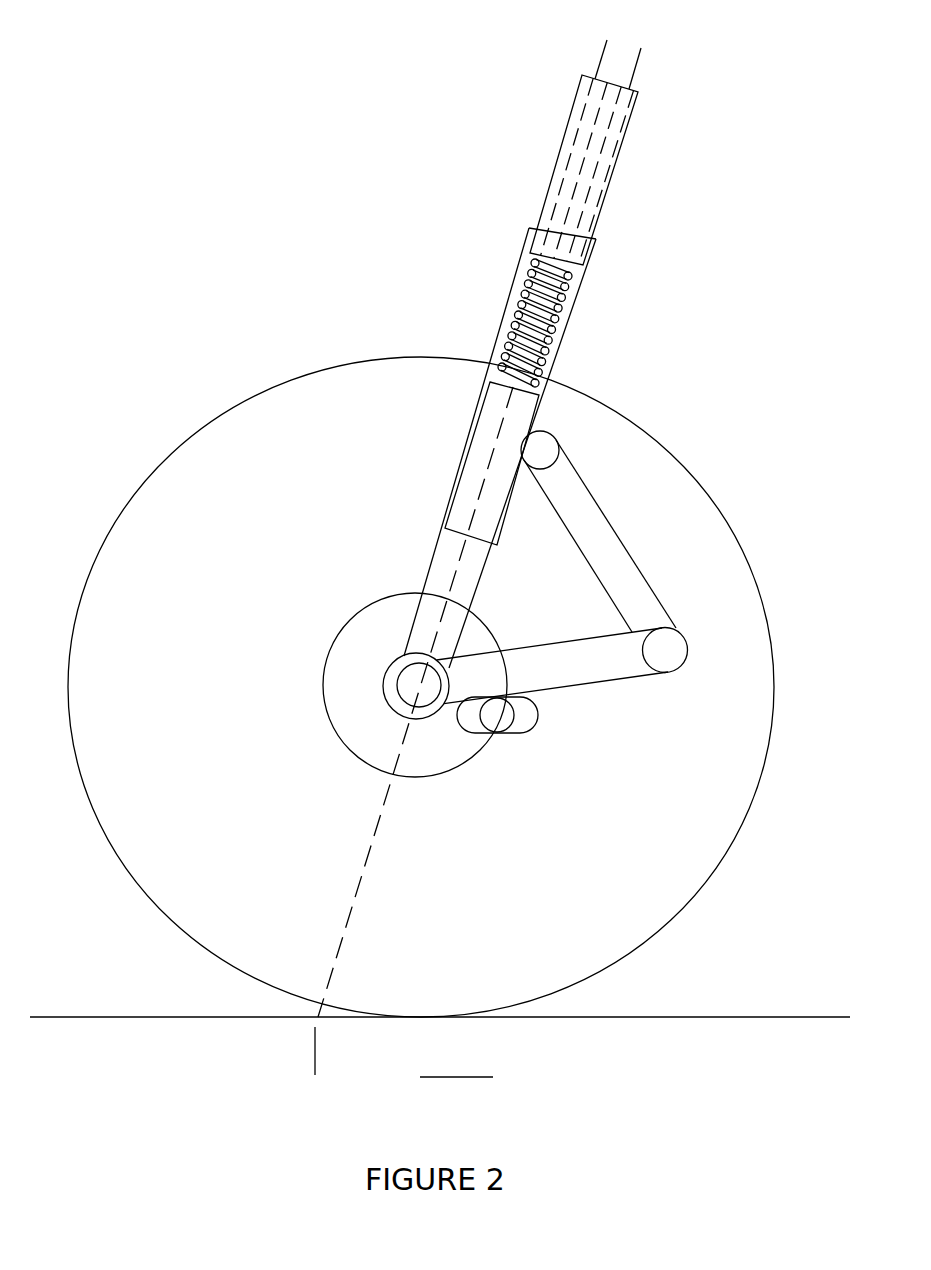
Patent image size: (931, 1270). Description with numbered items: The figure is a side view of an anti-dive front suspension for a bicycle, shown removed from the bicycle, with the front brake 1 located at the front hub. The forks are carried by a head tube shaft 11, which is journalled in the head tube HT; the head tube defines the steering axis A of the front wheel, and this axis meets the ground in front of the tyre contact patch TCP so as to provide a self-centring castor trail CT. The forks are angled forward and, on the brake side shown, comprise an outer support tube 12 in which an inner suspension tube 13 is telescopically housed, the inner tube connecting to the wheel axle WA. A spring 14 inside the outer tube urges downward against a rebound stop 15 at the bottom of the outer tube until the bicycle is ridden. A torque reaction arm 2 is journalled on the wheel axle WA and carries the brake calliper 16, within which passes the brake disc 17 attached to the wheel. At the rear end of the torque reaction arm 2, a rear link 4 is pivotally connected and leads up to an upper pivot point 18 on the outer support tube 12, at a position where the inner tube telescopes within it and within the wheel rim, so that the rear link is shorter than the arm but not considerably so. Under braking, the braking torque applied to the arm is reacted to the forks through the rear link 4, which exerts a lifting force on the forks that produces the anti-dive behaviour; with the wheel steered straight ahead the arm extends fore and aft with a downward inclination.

The front brake 1 is at (421, 687).
The torque reaction arm 2 is at (574, 666).
The rear link 4 is at (611, 536).
The head tube shaft 11 is at (663, 162).
The outer support tube 12 is at (482, 320).
The inner suspension tube 13 is at (423, 539).
The spring 14 is at (589, 317).
The rebound stop 15 is at (447, 463).
The brake calliper 16 is at (534, 720).
The brake disc 17 is at (365, 685).
The upper pivot point 18 is at (633, 409).
The wheel axle WA is at (332, 663).
The head tube HT is at (503, 101).
The steering axis A is at (385, 702).
The castor trail CT is at (367, 1051).
The tyre contact patch TCP is at (454, 1047).